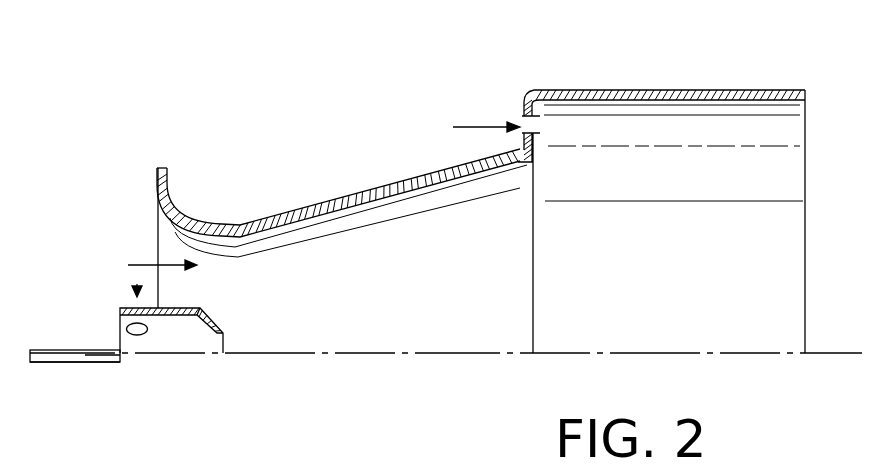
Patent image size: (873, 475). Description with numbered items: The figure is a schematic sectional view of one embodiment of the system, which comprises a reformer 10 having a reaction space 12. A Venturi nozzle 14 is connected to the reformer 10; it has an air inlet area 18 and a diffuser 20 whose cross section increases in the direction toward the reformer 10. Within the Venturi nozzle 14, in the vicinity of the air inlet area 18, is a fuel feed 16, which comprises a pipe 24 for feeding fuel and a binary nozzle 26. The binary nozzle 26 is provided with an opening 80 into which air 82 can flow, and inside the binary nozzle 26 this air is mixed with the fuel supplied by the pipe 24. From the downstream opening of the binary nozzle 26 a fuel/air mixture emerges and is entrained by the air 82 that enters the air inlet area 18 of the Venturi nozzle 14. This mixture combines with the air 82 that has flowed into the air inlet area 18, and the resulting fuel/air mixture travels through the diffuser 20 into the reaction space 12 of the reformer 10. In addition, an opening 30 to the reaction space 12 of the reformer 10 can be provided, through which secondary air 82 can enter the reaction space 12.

The reformer 10 is at (621, 90).
The reaction space 12 is at (722, 122).
The Venturi nozzle 14 is at (367, 196).
The fuel feed 16 is at (77, 363).
The air inlet area 18 is at (150, 237).
The diffuser 20 is at (432, 323).
The pipe 24 is at (50, 352).
The binary nozzle 26 is at (197, 342).
The opening 30 is at (521, 115).
The opening 80 is at (143, 335).
The air 82 is at (468, 125).